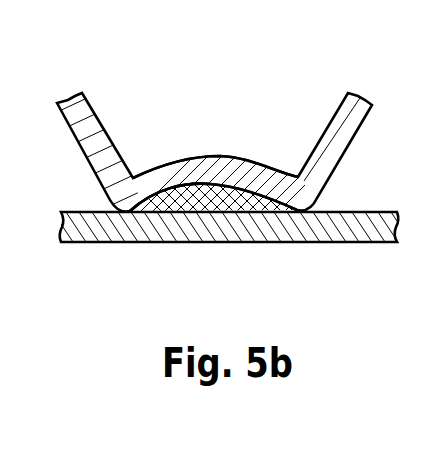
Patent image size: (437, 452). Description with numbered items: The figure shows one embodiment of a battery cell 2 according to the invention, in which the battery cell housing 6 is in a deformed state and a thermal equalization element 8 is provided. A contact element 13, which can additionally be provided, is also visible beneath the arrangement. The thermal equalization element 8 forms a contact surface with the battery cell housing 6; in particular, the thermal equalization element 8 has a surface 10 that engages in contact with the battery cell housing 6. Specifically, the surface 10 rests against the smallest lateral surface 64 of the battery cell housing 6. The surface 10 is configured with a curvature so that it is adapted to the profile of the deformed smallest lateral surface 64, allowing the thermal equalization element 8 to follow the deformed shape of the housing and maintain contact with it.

The battery cell 2 is at (305, 120).
The battery cell housing 6 is at (221, 135).
The surface 10 is at (214, 192).
The thermal equalization element 8 is at (222, 202).
The contact element 13 is at (322, 230).
The smallest lateral surface 64 is at (180, 190).